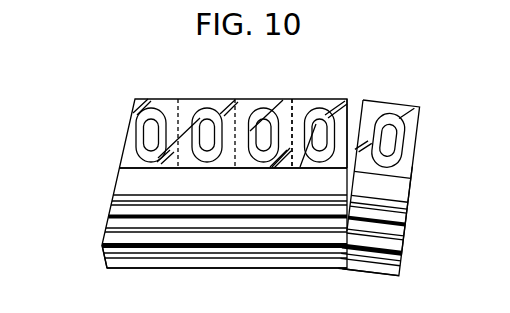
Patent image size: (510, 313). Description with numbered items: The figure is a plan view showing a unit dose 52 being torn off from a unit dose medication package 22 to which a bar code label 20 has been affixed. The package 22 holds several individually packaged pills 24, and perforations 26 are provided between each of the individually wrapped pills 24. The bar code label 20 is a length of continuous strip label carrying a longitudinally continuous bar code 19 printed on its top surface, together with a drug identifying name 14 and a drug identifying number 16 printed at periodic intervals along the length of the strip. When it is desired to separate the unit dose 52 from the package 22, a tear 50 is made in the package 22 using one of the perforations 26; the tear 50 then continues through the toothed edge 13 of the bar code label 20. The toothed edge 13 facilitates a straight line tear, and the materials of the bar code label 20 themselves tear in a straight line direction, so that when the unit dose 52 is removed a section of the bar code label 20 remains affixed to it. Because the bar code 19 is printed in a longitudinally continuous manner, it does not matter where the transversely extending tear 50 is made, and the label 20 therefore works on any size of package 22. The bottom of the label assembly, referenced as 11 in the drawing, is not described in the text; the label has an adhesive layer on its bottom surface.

The base layer 11 is at (140, 270).
The toothed edge 13 is at (132, 167).
The drug identifying name 14 is at (406, 178).
The drug identifying number 16 is at (410, 189).
The longitudinally continuous bar code 19 is at (283, 248).
The bar code label 20 is at (409, 233).
The unit dose medication package 22 is at (150, 88).
The individually packaged pills 24 is at (215, 118).
The perforations 26 is at (350, 115).
The tear 50 is at (354, 113).
The unit dose 52 is at (418, 128).